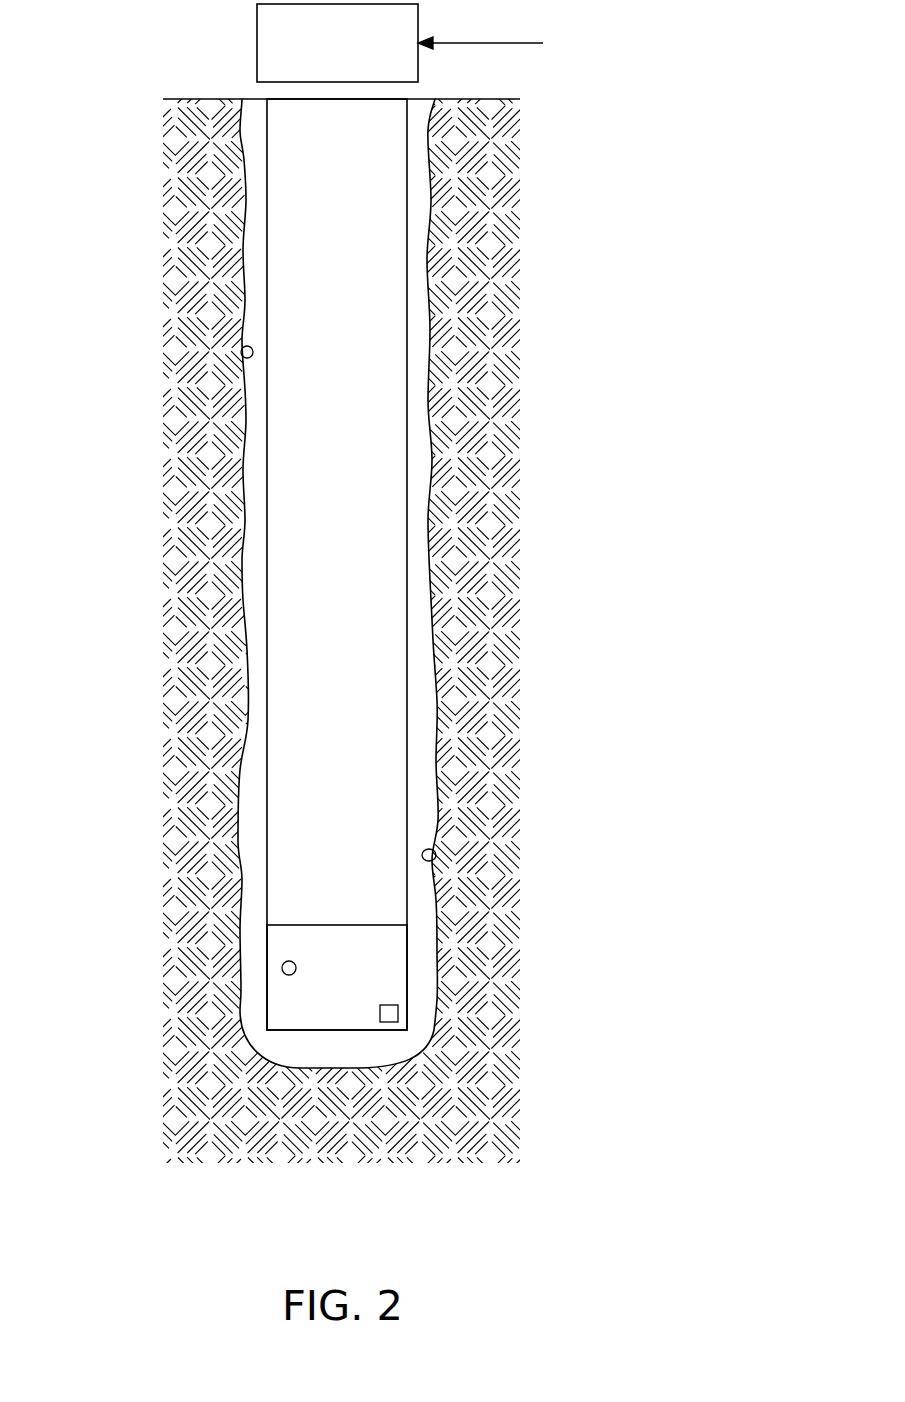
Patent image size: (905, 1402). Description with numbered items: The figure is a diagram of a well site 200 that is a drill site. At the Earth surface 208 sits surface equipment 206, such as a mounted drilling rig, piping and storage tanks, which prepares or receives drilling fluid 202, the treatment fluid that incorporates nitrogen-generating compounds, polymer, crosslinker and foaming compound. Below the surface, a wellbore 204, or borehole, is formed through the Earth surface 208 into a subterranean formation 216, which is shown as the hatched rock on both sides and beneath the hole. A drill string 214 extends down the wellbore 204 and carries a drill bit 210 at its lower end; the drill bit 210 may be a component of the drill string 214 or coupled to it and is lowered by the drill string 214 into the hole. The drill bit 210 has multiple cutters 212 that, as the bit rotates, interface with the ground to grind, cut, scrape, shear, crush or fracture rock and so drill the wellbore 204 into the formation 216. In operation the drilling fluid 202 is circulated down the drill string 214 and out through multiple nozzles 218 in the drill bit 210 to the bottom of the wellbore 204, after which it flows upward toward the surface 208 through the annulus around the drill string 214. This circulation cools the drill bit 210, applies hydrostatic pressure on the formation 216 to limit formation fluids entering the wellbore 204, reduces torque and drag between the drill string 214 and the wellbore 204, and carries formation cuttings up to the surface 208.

The well site 200 is at (348, 637).
The drilling fluid 202 is at (487, 43).
The wellbore 204 is at (243, 357).
The surface equipment 206 is at (361, 57).
The Earth surface 208 is at (195, 98).
The drill bit 210 is at (303, 1003).
The cutters 212 is at (395, 1005).
The drill string 214 is at (365, 545).
The subterranean formation 216 is at (198, 198).
The nozzles 218 is at (283, 965).